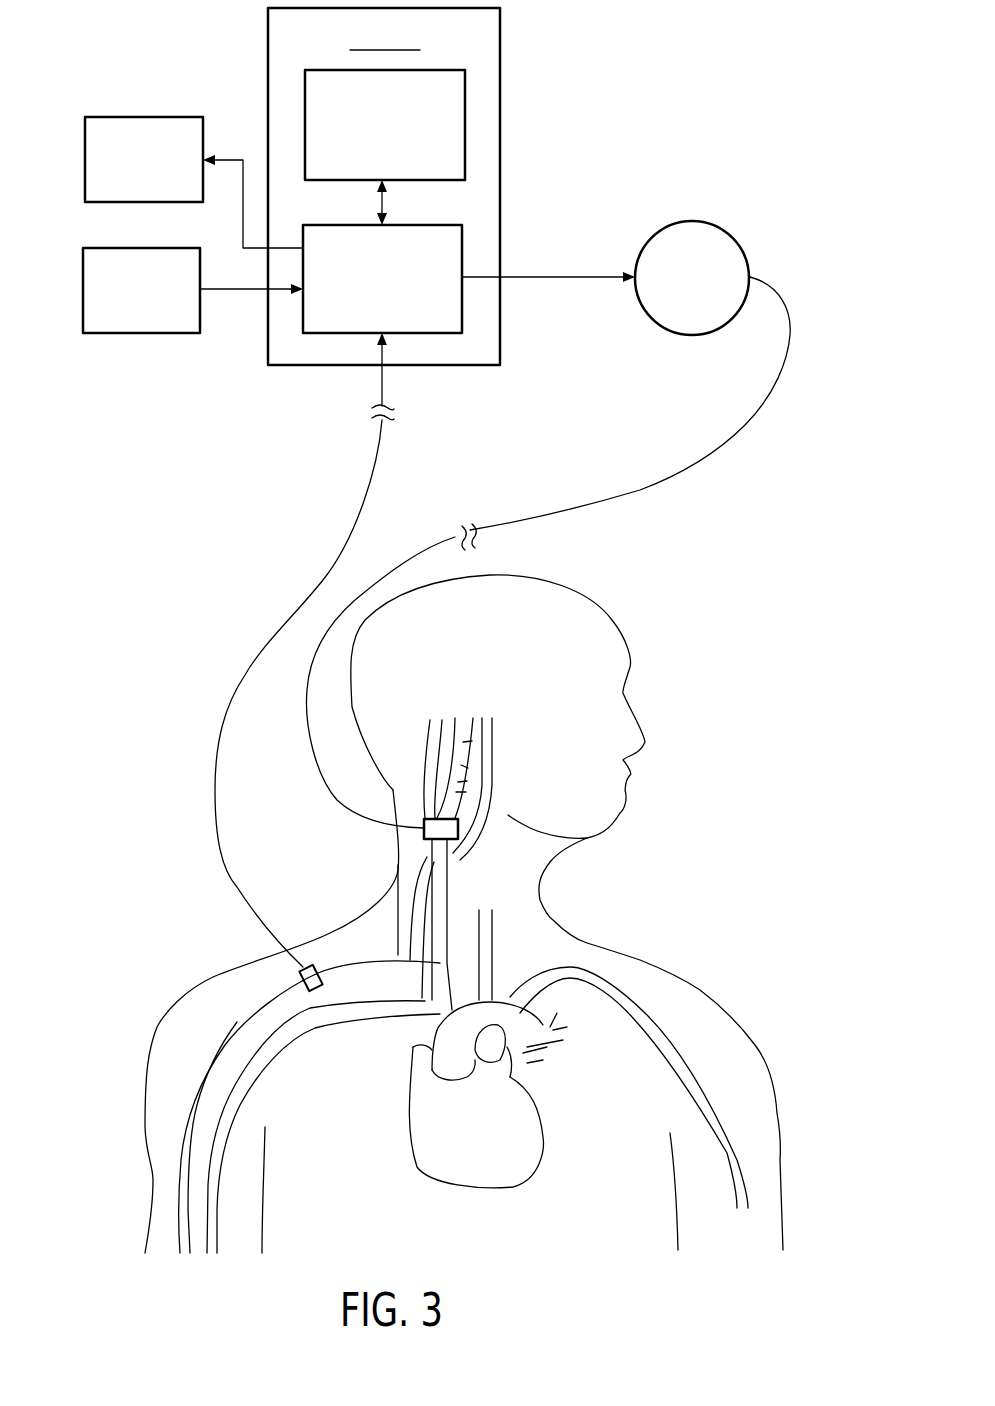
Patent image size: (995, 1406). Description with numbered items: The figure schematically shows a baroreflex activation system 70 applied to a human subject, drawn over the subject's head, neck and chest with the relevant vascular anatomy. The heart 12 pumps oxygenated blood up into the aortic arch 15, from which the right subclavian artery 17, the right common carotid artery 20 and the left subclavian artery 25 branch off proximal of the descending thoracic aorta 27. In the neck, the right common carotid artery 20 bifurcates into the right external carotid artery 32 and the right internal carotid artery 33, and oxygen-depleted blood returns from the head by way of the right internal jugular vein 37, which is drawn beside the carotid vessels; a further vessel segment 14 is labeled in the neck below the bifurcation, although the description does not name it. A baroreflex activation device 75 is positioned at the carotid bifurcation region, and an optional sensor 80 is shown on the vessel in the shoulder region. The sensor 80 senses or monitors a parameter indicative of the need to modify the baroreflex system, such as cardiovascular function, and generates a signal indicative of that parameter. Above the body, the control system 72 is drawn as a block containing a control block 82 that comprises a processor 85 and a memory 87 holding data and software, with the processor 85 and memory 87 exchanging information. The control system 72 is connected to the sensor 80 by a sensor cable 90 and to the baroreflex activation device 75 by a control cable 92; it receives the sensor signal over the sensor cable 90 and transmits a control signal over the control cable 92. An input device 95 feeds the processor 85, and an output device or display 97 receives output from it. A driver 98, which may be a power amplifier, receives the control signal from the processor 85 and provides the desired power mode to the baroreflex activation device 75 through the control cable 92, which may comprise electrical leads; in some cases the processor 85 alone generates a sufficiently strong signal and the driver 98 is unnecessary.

The baroreflex activation system 70 is at (121, 425).
The control system 72 is at (531, 39).
The control block 82 is at (487, 87).
The memory 87 is at (465, 128).
The processor 85 is at (462, 305).
The display 97 is at (148, 117).
The input device 95 is at (147, 335).
The driver 98 is at (675, 334).
The sensor cable 90 is at (322, 583).
The control cable 92 is at (673, 475).
The right subclavian artery 17 is at (157, 993).
The sensor 80 is at (317, 970).
The baroreflex activation device 75 is at (424, 835).
The right common carotid artery 20 is at (406, 810).
The right external carotid artery 32 is at (430, 750).
The right internal carotid artery 33 is at (462, 737).
The right internal jugular vein 37 is at (487, 765).
The common carotid artery 14 is at (440, 882).
The aortic arch 15 is at (487, 962).
The left subclavian artery 25 is at (598, 987).
The descending thoracic aorta 27 is at (520, 1012).
The heart 12 is at (523, 1163).